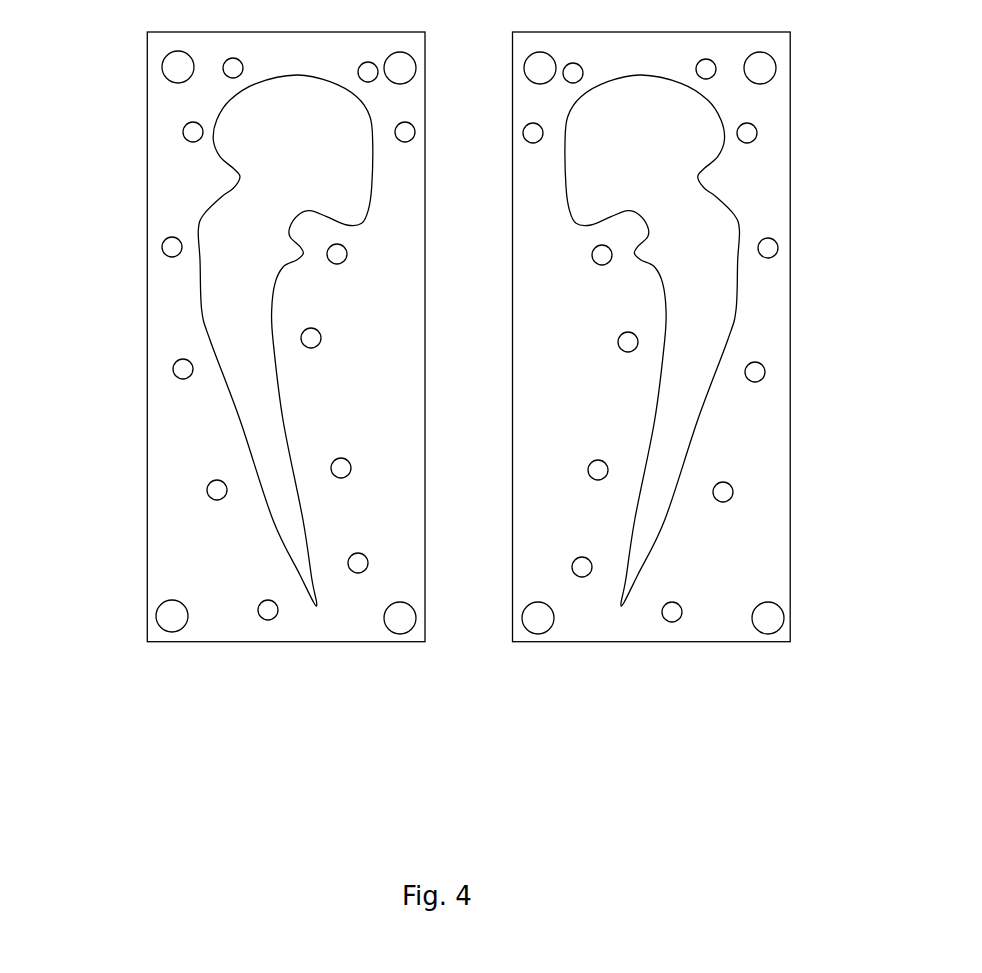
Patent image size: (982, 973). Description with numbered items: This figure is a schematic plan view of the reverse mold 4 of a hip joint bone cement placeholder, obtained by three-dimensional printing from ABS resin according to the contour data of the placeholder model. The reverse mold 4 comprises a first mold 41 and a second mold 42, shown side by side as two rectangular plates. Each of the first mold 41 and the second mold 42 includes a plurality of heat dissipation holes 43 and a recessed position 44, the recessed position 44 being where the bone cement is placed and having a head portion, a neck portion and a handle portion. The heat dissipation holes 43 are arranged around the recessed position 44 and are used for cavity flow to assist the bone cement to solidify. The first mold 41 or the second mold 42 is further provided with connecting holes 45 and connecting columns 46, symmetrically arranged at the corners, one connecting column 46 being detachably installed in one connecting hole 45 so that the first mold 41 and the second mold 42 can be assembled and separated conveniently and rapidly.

The clamping plate assembly 4 is at (463, 428).
The first clamping plate 41 is at (339, 640).
The second clamping plate 42 is at (612, 642).
The small positioning holes 43 is at (171, 250).
The shaped cutout opening 44 is at (220, 333).
The large mounting holes of first plate 45 is at (175, 64).
The large mounting holes of second plate 46 is at (757, 69).